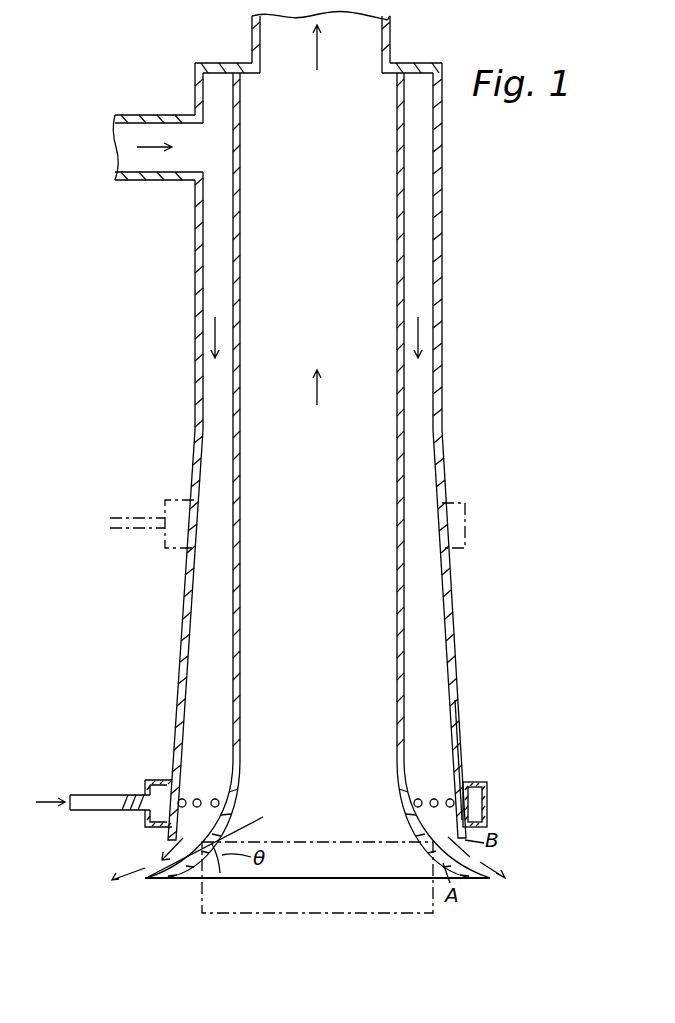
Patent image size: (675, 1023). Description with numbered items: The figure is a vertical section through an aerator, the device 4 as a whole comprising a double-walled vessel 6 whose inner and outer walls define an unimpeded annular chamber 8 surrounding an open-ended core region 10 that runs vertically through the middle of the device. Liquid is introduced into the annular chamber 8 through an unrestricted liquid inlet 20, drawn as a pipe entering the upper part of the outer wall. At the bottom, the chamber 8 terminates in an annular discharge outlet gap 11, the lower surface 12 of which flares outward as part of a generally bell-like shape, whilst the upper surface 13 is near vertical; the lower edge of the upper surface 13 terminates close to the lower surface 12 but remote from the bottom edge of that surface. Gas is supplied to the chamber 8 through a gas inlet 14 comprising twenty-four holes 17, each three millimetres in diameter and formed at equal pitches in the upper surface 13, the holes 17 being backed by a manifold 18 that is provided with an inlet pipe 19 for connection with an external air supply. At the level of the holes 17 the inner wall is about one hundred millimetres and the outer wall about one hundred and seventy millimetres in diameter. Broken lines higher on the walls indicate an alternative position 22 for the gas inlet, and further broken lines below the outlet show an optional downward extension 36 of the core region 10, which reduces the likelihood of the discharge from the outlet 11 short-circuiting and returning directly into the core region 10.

The device 4 is at (487, 264).
The double-walled vessel 6 is at (230, 642).
The annular chamber 8 is at (425, 605).
The core region 10 is at (326, 573).
The annular discharge outlet gap 11 is at (435, 847).
The lower surface 12 is at (158, 870).
The upper surface 13 is at (457, 722).
The gas inlet 14 is at (507, 789).
The holes 17 is at (195, 797).
The manifold 18 is at (157, 780).
The inlet pipe 19 is at (84, 795).
The liquid inlet 20 is at (152, 115).
The alternative position for the gas inlet 22 is at (487, 520).
The downward extension 36 is at (202, 912).